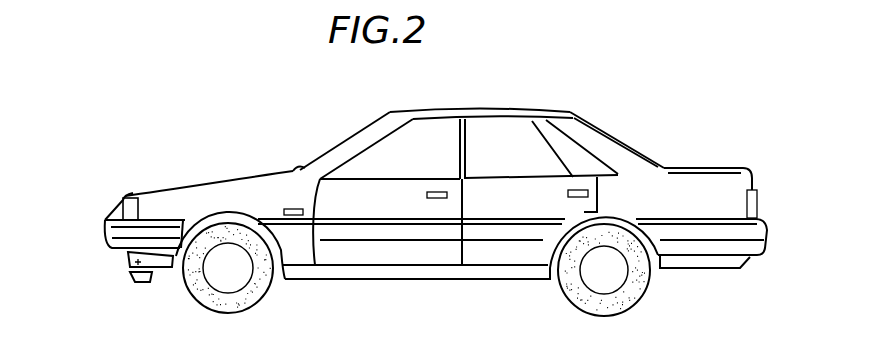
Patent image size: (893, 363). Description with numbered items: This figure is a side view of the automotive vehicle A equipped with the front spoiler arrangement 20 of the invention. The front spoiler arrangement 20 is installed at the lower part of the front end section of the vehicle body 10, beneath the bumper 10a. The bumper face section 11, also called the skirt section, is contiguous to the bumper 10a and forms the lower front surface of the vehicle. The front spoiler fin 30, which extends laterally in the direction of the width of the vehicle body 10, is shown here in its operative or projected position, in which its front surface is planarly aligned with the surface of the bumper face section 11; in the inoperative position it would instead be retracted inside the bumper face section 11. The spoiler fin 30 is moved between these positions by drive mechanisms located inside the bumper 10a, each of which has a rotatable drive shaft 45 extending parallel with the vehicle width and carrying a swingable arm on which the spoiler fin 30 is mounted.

The automotive vehicle A is at (185, 155).
The vehicle body 10 is at (255, 180).
The bumper 10a is at (109, 219).
The bumper face section 11 is at (128, 257).
The front spoiler arrangement 20 is at (157, 286).
The front spoiler fin 30 is at (126, 287).
The rotatable drive shaft 45 is at (127, 262).